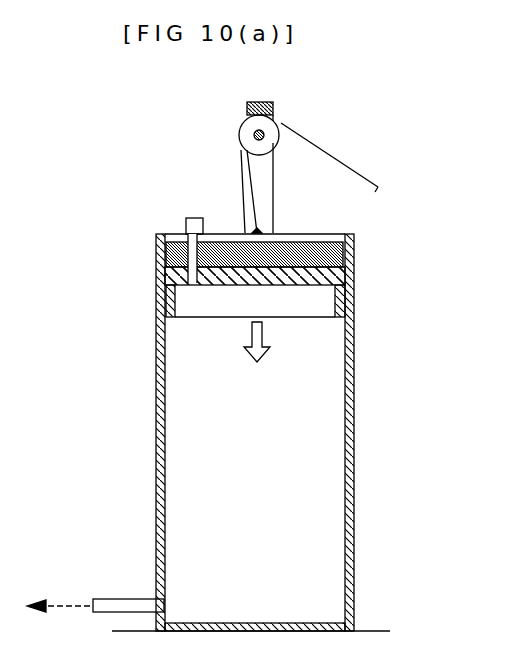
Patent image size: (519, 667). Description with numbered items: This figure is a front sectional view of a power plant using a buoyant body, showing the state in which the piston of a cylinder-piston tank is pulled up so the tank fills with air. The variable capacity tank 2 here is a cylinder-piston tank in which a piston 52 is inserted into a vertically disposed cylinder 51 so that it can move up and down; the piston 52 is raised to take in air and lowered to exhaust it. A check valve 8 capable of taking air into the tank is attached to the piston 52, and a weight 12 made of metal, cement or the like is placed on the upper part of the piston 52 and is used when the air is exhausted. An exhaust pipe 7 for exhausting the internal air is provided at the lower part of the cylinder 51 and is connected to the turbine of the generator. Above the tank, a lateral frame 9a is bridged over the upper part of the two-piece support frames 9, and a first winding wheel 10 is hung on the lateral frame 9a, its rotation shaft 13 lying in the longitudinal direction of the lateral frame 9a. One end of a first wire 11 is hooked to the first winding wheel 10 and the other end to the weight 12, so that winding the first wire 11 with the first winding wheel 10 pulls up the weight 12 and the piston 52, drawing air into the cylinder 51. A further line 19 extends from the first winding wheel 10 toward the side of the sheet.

The variable capacity tank 2 is at (378, 236).
The cylinder 51 is at (156, 428).
The piston 52 is at (165, 286).
The weight 12 is at (319, 239).
The check valve 8 is at (195, 218).
The exhaust pipe 7 is at (130, 598).
The support frame 9 is at (240, 165).
The lateral frame 9a is at (262, 102).
The first winding wheel 10 is at (238, 135).
The first wire 11 is at (250, 185).
The rotation shaft 13 is at (265, 135).
The wire 19 is at (355, 170).